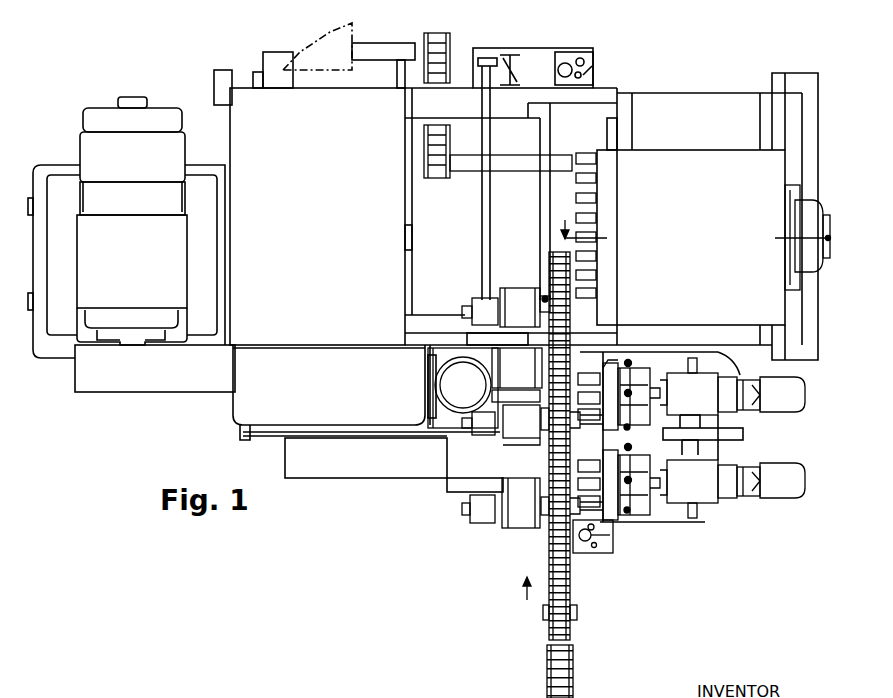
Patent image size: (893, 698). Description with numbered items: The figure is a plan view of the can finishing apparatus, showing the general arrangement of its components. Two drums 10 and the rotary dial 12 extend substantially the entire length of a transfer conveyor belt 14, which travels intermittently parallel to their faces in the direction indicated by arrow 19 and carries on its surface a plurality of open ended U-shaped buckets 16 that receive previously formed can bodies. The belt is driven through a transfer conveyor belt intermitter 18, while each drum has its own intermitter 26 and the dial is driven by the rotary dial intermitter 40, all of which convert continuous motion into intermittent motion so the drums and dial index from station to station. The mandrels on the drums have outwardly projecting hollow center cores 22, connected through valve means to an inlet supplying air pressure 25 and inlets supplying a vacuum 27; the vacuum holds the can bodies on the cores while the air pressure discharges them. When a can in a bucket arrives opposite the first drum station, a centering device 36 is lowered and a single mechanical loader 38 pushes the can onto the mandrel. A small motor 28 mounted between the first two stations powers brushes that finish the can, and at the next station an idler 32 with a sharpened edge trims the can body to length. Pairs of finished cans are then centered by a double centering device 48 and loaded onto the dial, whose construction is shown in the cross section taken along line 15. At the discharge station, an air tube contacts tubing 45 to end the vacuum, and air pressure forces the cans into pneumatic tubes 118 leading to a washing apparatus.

The drum 10 is at (620, 426).
The rotary dial 12 is at (608, 165).
The transfer conveyor belt 14 is at (568, 585).
The cross section line 15 is at (696, 219).
The U-shaped bucket 16 is at (563, 627).
The transfer conveyor belt intermitter 18 is at (500, 367).
The arrow 19 is at (524, 604).
The hollow center core 22 is at (583, 156).
The air pressure inlet 25 is at (630, 361).
The drum intermitter 26 is at (707, 405).
The vacuum inlet 27 is at (645, 368).
The small motor 28 is at (560, 427).
The idler 32 is at (606, 366).
The centering device 36 is at (548, 412).
The single mechanical loader 38 is at (507, 295).
The rotary dial intermitter 40 is at (800, 187).
The tubing 45 is at (812, 236).
The double centering device 48 is at (540, 290).
The pneumatic tube 118 is at (374, 48).